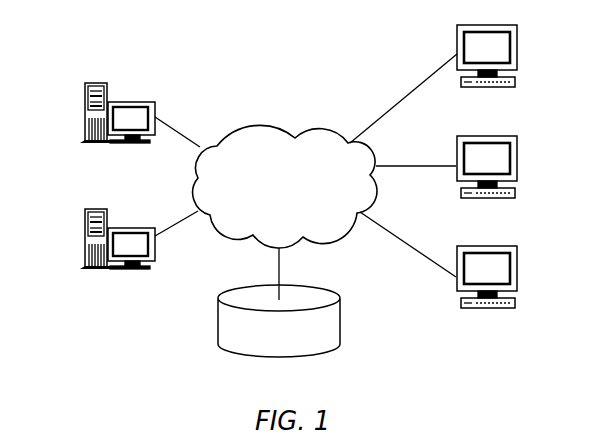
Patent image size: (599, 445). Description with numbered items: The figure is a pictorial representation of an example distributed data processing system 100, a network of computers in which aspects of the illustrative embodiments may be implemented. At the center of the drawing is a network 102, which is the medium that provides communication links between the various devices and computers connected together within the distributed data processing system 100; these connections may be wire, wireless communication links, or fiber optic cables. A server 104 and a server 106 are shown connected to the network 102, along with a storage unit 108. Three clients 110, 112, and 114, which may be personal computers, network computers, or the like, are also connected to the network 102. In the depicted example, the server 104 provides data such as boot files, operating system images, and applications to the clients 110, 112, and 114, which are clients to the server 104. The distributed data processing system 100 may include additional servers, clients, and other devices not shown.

The distributed data processing system 100 is at (343, 66).
The network 102 is at (268, 127).
The server 104 is at (85, 115).
The server 106 is at (85, 240).
The storage unit 108 is at (218, 325).
The client 110 is at (517, 50).
The client 112 is at (517, 163).
The client 114 is at (517, 280).